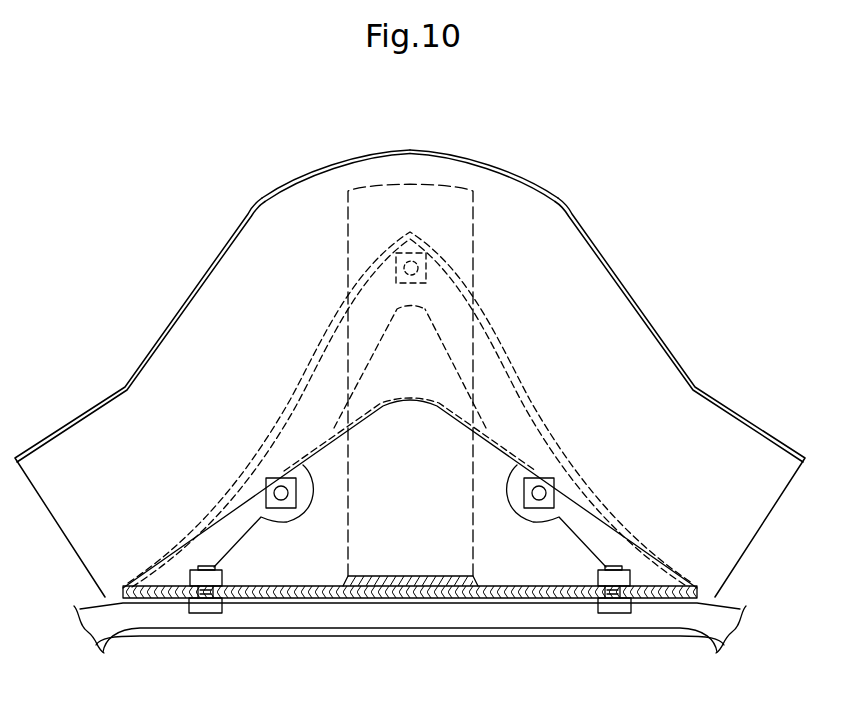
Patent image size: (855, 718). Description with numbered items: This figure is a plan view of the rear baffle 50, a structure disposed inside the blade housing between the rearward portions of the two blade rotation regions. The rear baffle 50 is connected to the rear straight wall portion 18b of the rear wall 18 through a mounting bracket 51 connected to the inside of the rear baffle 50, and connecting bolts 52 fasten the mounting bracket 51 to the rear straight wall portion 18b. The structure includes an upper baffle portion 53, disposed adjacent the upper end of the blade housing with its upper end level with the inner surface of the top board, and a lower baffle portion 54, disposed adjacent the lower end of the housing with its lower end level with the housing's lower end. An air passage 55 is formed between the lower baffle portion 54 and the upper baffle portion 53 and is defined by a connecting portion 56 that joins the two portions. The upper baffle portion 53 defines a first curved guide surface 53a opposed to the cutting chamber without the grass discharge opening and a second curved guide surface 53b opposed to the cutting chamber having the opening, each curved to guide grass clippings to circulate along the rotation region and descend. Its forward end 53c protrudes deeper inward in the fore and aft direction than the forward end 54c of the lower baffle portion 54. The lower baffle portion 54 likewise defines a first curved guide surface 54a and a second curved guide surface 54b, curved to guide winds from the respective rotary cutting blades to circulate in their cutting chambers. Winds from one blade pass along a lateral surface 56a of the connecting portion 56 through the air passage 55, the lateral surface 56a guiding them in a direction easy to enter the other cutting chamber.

The rear baffle 50 is at (410, 334).
The mounting bracket 51 is at (268, 586).
The connecting bolts 52 is at (207, 607).
The upper baffle portion 53 is at (410, 334).
The first curved guide surface 53a is at (200, 267).
The second curved guide surface 53b is at (624, 273).
The forward end 53c is at (408, 150).
The lower baffle portion 54 is at (410, 356).
The first curved guide surface 54a is at (314, 368).
The second curved guide surface 54b is at (506, 368).
The forward end 54c is at (405, 230).
The air passage 55 is at (232, 338).
The connecting portion 56 is at (390, 493).
The lateral surface 56a is at (243, 503).
The rear wall 18 is at (410, 653).
The rear straight wall portion 18b is at (413, 600).